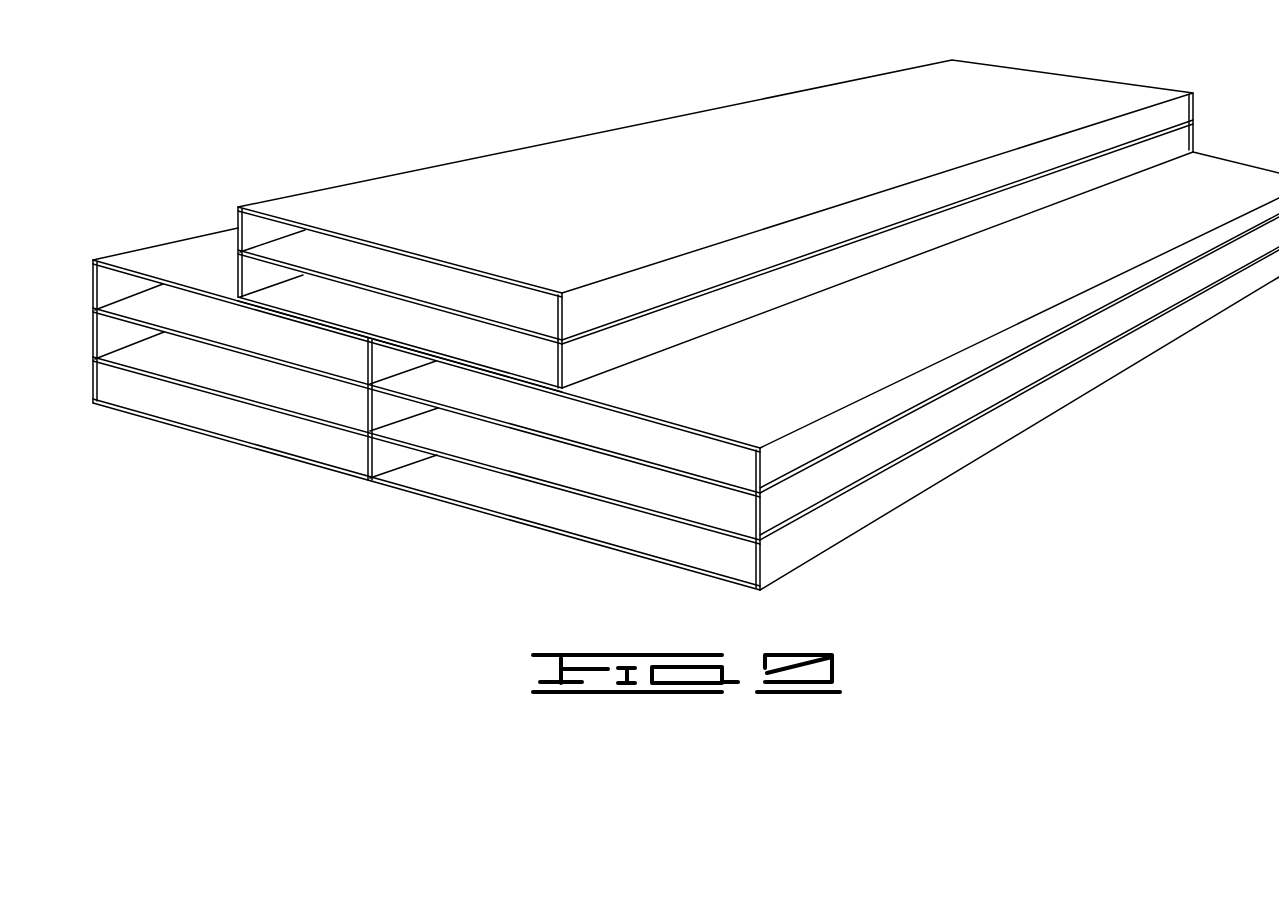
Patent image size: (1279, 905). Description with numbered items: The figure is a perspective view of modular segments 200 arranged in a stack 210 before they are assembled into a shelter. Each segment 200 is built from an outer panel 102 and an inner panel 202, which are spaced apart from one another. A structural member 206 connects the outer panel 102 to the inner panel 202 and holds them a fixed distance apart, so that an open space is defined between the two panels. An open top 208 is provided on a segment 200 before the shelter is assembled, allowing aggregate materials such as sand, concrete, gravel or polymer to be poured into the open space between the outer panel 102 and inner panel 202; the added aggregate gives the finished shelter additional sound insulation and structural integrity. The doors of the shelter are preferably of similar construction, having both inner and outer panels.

The segment 200 is at (712, 128).
The outer panel 102 is at (278, 257).
The inner panel 202 is at (322, 227).
The structural member 206 is at (255, 225).
The open top 208 is at (383, 272).
The stack 210 is at (87, 257).